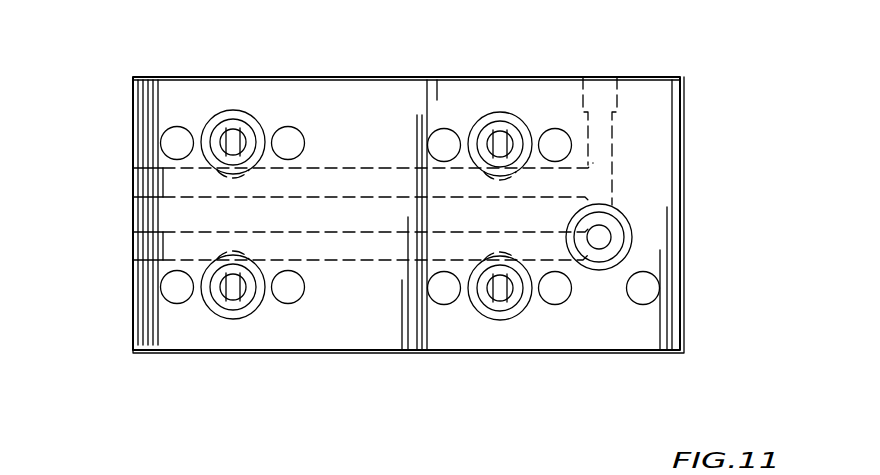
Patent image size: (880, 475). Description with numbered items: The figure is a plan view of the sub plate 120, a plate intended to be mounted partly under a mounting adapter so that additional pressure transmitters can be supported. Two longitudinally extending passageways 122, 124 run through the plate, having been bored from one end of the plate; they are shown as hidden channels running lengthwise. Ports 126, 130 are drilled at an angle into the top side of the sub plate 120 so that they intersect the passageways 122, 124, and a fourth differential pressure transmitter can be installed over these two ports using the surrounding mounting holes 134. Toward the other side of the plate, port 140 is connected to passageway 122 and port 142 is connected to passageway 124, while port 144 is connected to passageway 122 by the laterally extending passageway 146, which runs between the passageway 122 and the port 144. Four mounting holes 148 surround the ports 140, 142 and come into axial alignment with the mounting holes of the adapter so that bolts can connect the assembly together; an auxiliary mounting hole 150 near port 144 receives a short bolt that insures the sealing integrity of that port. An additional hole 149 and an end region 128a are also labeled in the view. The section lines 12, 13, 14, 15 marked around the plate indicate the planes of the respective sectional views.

The section line 12- 12 is at (233, 30).
The section line 13- 13 is at (502, 30).
The section line 14- 14 is at (600, 30).
The section line 15- 15 is at (45, 30).
The sub plate 120 is at (660, 71).
The passageway 122 is at (357, 176).
The passageway 124 is at (366, 250).
The port 126 is at (233, 292).
The passage end port 128a is at (132, 213).
The port 130 is at (235, 136).
The mounting holes 134 is at (290, 128).
The port 140 is at (500, 140).
The port 142 is at (500, 290).
The port 144 is at (602, 236).
The laterally extending passageway 146 is at (608, 140).
The mounting holes 148 is at (444, 140).
The mounting hole 149 is at (555, 290).
The mounting hole 150 is at (645, 288).